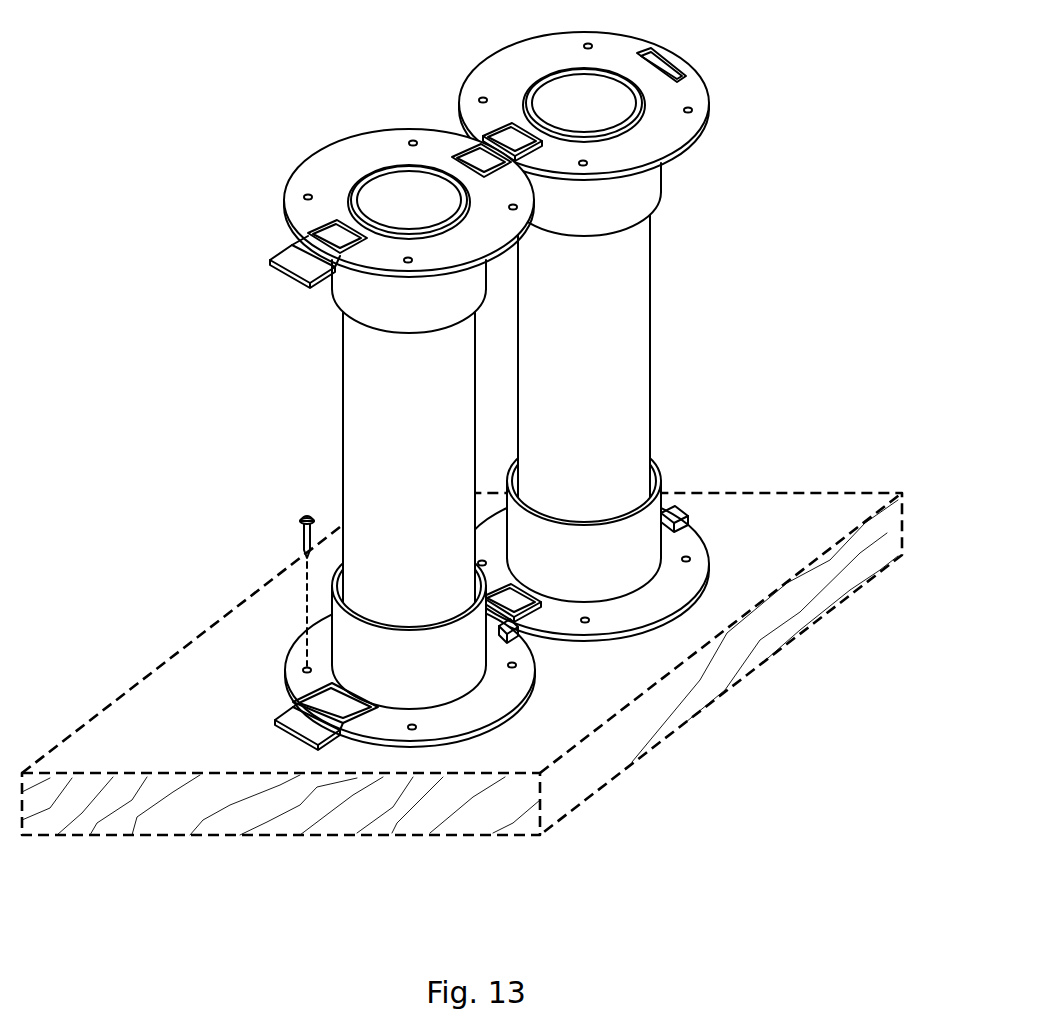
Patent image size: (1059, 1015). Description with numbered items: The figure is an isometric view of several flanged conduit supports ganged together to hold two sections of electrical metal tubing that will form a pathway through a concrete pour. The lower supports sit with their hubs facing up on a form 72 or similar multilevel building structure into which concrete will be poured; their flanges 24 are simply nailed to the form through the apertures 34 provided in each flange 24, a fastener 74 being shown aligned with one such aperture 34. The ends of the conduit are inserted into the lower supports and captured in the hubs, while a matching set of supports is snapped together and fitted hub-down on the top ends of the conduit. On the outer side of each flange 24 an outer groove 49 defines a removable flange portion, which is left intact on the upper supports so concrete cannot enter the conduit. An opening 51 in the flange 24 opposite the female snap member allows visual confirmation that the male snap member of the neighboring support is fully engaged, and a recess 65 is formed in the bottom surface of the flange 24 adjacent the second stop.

The flange 24 is at (298, 663).
The aperture 34 is at (688, 557).
The outer groove 49 is at (396, 167).
The opening 51 is at (665, 58).
The recess 65 is at (513, 147).
The form 72 is at (720, 673).
The fastener / screw 74 is at (298, 538).